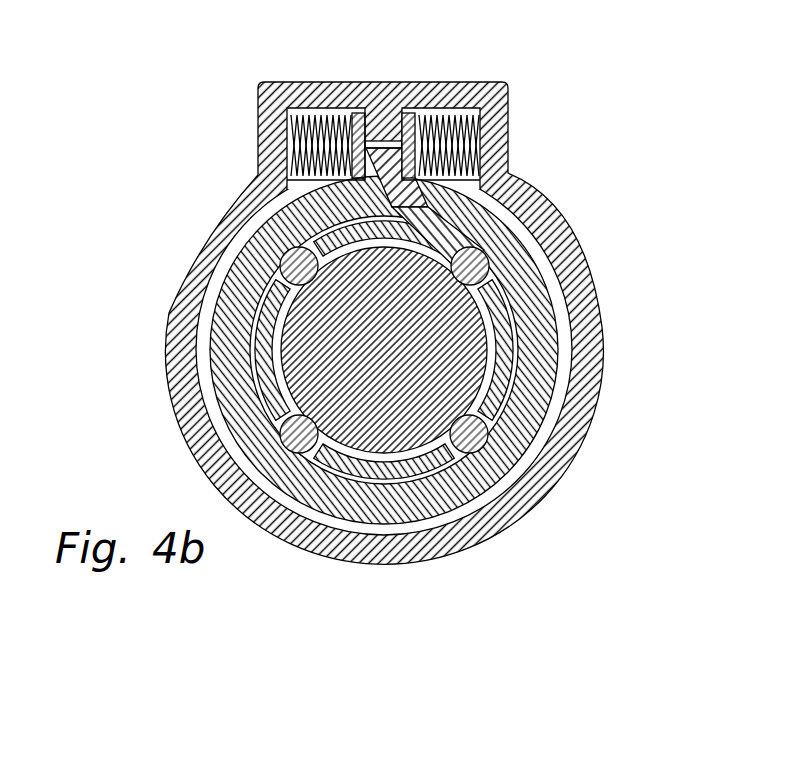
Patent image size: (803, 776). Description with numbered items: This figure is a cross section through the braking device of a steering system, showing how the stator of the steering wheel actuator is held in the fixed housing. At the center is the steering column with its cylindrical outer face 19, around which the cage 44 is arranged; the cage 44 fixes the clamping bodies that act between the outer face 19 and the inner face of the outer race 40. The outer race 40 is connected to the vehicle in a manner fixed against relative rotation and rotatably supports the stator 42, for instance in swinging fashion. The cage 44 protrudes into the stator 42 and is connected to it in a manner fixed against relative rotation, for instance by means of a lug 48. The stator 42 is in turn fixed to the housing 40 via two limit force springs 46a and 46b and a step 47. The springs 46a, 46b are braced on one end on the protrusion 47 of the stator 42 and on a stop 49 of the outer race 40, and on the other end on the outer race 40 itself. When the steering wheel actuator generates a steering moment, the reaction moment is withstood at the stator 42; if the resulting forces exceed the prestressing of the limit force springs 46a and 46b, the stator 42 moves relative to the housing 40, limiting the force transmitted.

The outer race 40 is at (587, 307).
The stator 42 is at (520, 258).
The cage 44 is at (252, 314).
The cylindrical outer face 19 is at (282, 373).
The step 47 is at (389, 138).
The lug 48 is at (390, 208).
The stop 49 is at (379, 125).
The limit force spring 46a is at (470, 143).
The limit force spring 46b is at (288, 141).